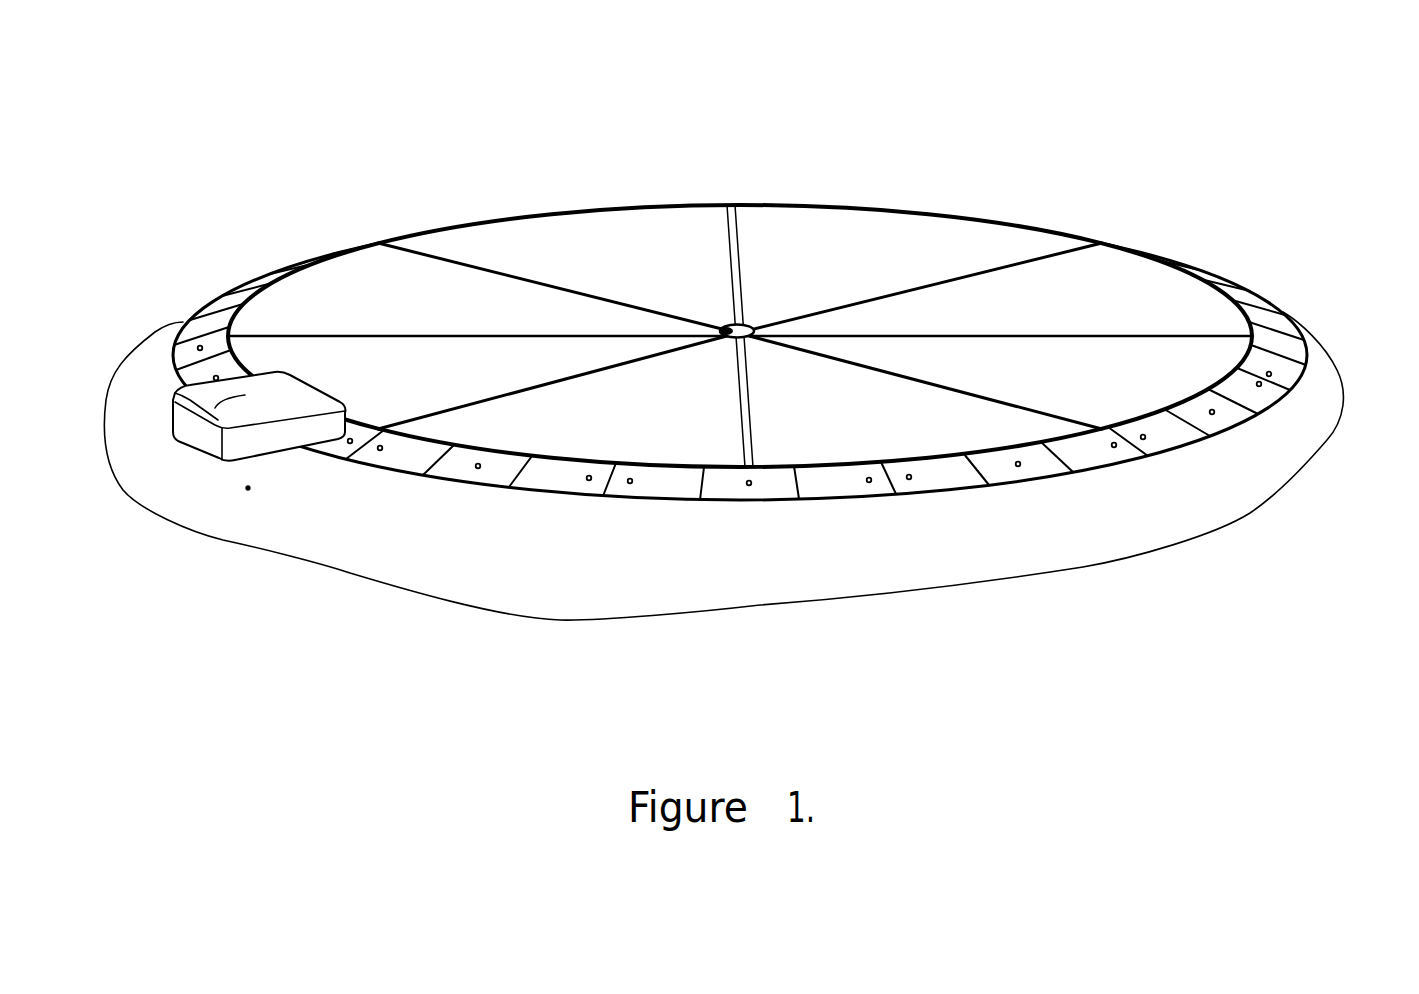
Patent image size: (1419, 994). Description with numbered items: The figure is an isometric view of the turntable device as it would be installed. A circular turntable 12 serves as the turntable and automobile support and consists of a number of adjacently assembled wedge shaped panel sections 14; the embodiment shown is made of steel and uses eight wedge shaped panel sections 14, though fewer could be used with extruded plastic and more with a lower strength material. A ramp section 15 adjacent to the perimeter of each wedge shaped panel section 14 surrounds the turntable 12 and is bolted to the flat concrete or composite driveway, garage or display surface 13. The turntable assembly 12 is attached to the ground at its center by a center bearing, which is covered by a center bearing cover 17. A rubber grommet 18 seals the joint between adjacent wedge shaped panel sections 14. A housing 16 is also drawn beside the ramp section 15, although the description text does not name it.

The circular turntable 12 is at (752, 355).
The driveway, garage or display surface 13 is at (1005, 530).
The wedge shaped panel section 14 is at (740, 355).
The ramp section 15 is at (1168, 433).
The housing box 16 is at (243, 392).
The center bearing cover 17 is at (752, 323).
The rubber grommet 18 is at (737, 430).